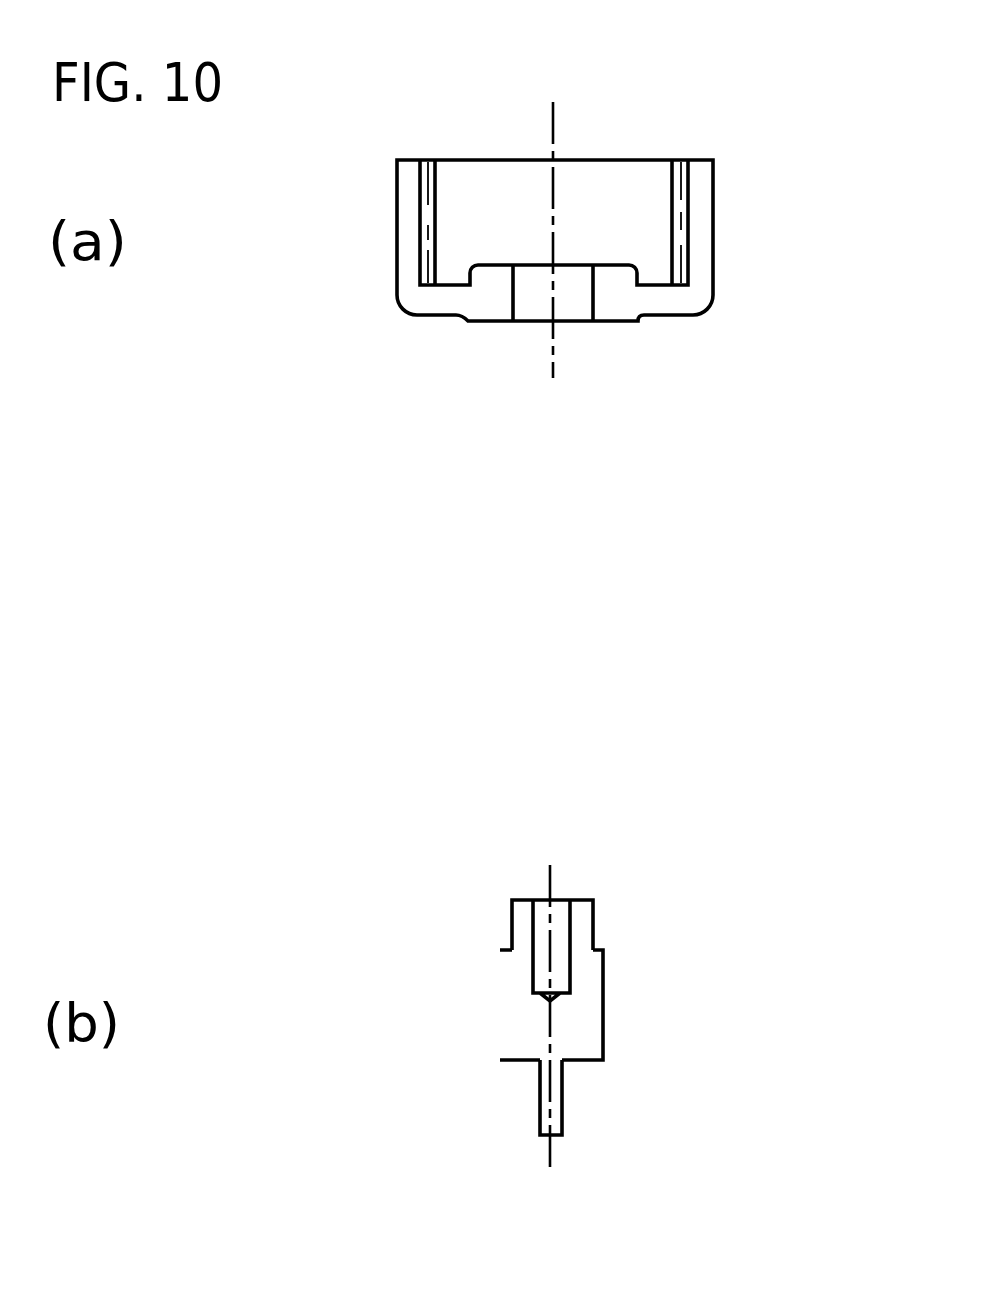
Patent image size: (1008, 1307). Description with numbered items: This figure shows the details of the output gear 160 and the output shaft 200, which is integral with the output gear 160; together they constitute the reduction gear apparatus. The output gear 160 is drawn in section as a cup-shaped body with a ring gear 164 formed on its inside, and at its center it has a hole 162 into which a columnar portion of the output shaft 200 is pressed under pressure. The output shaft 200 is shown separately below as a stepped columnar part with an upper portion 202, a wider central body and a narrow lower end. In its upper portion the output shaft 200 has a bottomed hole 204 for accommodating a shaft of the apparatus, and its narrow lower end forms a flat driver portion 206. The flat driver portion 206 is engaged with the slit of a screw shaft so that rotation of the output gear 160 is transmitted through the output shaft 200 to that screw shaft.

The output gear 160 is at (700, 277).
The hole 162 is at (593, 300).
The ring gear 164 is at (672, 192).
The output shaft 200 is at (585, 1037).
The head portion 202 is at (595, 928).
The bottomed hole 204 is at (566, 918).
The flat driver portion 206 is at (563, 1107).